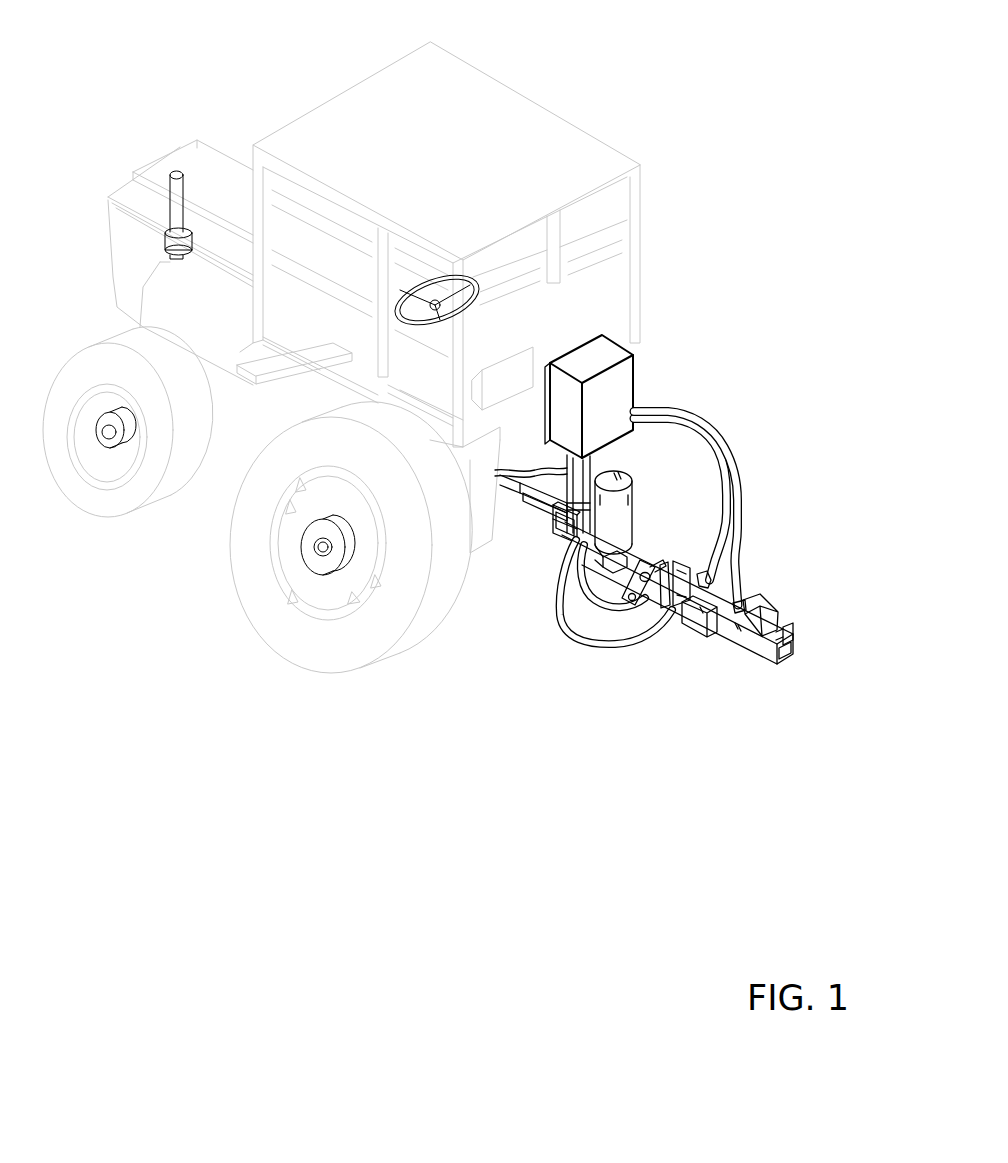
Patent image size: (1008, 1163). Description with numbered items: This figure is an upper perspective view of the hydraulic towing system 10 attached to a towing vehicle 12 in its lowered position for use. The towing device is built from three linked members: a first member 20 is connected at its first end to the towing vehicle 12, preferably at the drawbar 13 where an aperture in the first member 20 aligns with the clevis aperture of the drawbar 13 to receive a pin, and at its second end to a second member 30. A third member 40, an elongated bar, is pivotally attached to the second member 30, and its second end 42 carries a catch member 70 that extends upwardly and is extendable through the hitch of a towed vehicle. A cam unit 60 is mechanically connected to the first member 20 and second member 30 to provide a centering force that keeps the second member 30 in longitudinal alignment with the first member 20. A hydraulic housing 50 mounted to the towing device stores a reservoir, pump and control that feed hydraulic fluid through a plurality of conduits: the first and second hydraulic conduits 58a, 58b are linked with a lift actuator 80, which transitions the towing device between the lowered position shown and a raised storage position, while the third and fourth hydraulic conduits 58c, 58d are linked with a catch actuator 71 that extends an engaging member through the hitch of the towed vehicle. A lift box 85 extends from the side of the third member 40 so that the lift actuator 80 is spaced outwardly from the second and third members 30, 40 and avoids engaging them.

The hydraulic towing system 10 is at (743, 318).
The towing vehicle 12 is at (538, 100).
The drawbar 13 is at (542, 517).
The first member 20 is at (603, 500).
The second member 30 is at (663, 533).
The third member 40 is at (755, 650).
The second end 42 is at (787, 652).
The hydraulic housing 50 is at (613, 382).
The first hydraulic conduit 58a is at (743, 521).
The second hydraulic conduit 58b is at (711, 413).
The third hydraulic conduit 58c is at (610, 632).
The fourth hydraulic conduit 58d is at (620, 617).
The cam unit 60 is at (633, 490).
The catch member 70 is at (783, 624).
The catch actuator 71 is at (700, 577).
The lift actuator 80 is at (665, 604).
The lift box 85 is at (713, 645).